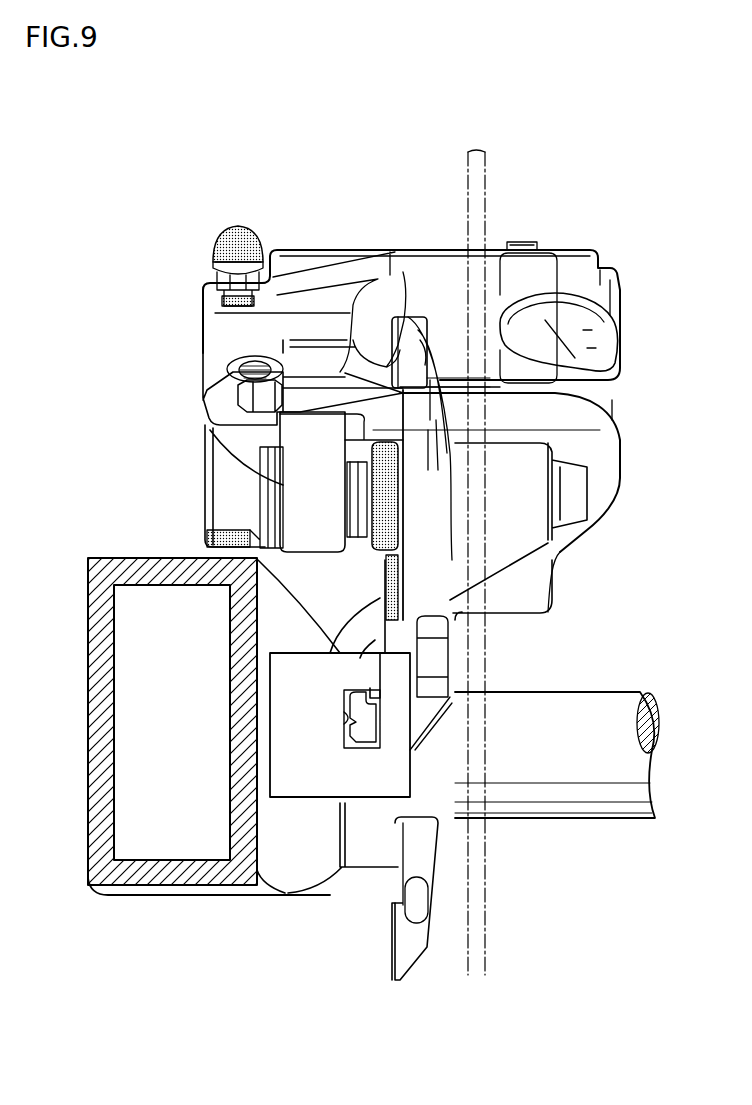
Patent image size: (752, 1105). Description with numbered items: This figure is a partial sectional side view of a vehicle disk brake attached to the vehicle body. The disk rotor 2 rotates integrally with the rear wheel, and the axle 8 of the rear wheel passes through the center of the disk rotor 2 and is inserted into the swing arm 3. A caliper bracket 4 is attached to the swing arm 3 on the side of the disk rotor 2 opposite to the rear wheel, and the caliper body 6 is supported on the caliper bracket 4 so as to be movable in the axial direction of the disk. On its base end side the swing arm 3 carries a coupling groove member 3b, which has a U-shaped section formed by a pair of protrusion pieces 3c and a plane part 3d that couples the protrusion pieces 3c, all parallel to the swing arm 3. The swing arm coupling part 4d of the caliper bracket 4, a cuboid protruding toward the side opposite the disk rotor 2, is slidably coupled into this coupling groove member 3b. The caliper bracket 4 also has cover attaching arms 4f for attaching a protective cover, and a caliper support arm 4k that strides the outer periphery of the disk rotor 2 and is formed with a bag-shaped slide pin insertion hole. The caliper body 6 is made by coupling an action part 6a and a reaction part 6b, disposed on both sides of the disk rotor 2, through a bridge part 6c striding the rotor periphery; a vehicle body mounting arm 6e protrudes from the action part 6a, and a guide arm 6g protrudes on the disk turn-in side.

The disk rotor 2 is at (490, 884).
The swing arm 3 is at (86, 663).
The coupling groove member 3b is at (312, 802).
The protrusion piece 3c is at (353, 658).
The plane part 3d is at (344, 724).
The caliper bracket 4 is at (522, 624).
The swing arm coupling part 4d is at (368, 738).
The cover attaching arm 4f is at (412, 315).
The caliper support arm 4k is at (510, 452).
The caliper body 6 is at (556, 236).
The action part 6a is at (213, 472).
The reaction part 6b is at (617, 432).
The bridge part 6c is at (455, 258).
The vehicle body mounting arm 6e is at (313, 543).
The guide arm 6g is at (303, 258).
The axle 8 is at (578, 805).